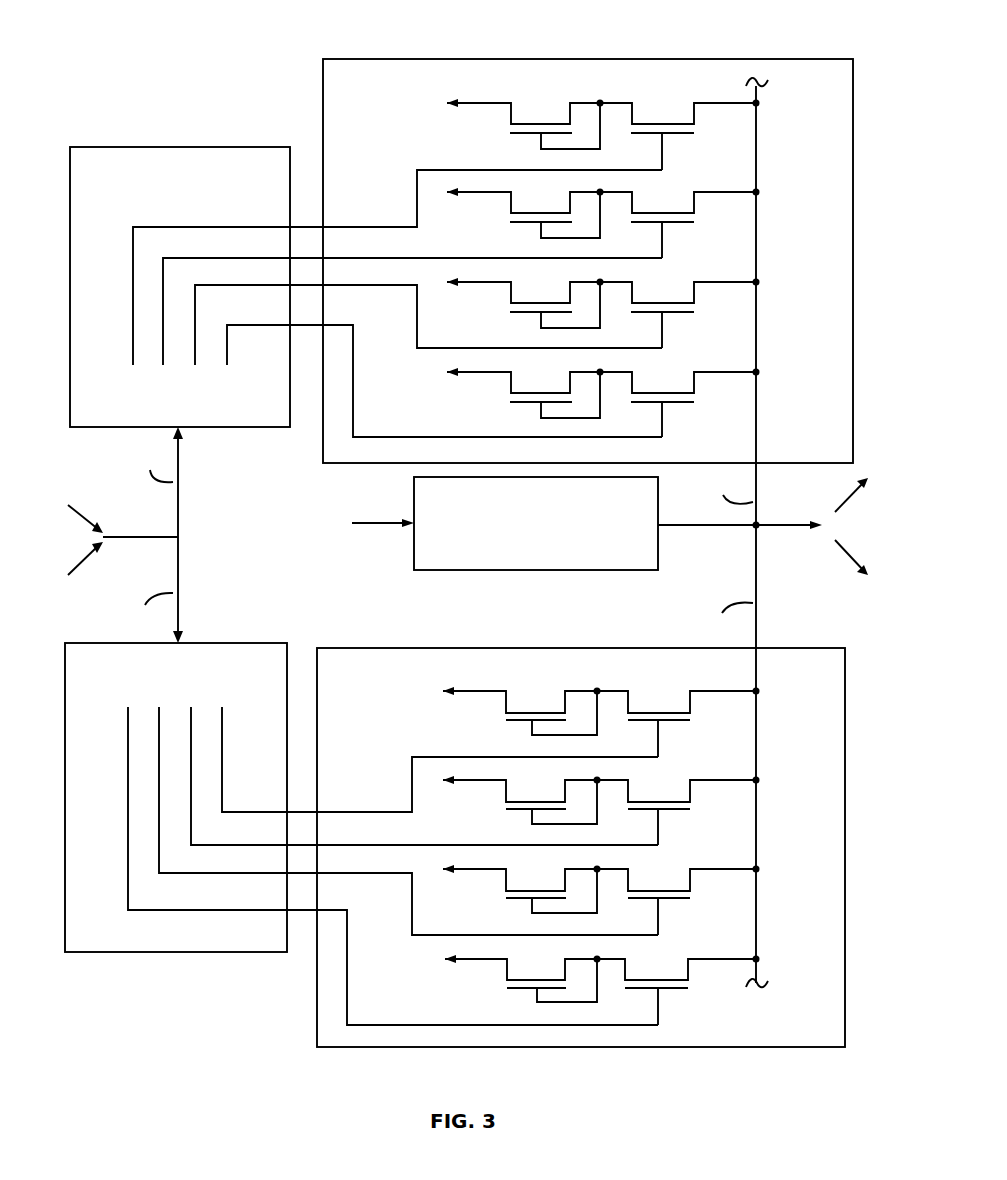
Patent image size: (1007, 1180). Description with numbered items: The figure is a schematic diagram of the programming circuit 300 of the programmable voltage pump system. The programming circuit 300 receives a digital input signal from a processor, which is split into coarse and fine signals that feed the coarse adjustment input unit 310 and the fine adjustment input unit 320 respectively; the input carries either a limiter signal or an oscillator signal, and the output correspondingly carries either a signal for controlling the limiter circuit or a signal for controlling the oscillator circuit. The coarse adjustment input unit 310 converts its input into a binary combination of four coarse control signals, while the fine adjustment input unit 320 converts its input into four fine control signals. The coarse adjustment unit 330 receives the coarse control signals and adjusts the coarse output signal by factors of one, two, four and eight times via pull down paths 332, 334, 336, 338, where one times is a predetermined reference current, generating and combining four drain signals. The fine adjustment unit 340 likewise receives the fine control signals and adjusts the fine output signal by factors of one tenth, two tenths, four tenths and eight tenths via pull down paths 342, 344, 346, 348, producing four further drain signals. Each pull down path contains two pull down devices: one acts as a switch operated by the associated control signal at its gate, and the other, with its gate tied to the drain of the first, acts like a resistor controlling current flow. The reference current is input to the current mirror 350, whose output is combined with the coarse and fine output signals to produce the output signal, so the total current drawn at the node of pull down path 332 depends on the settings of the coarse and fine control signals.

The programming circuit 300 is at (166, 25).
The coarse adjustment input unit 310 is at (248, 147).
The fine adjustment input unit 320 is at (203, 952).
The coarse adjustment unit 330 is at (657, 58).
The pull down path 332 is at (657, 90).
The pull down path 334 is at (657, 180).
The pull down path 336 is at (657, 270).
The pull down path 338 is at (657, 360).
The fine adjustment unit 340 is at (698, 1047).
The pull down path 342 is at (660, 954).
The pull down path 344 is at (657, 859).
The pull down path 346 is at (657, 769).
The pull down path 348 is at (657, 679).
The current mirror 350 is at (527, 570).